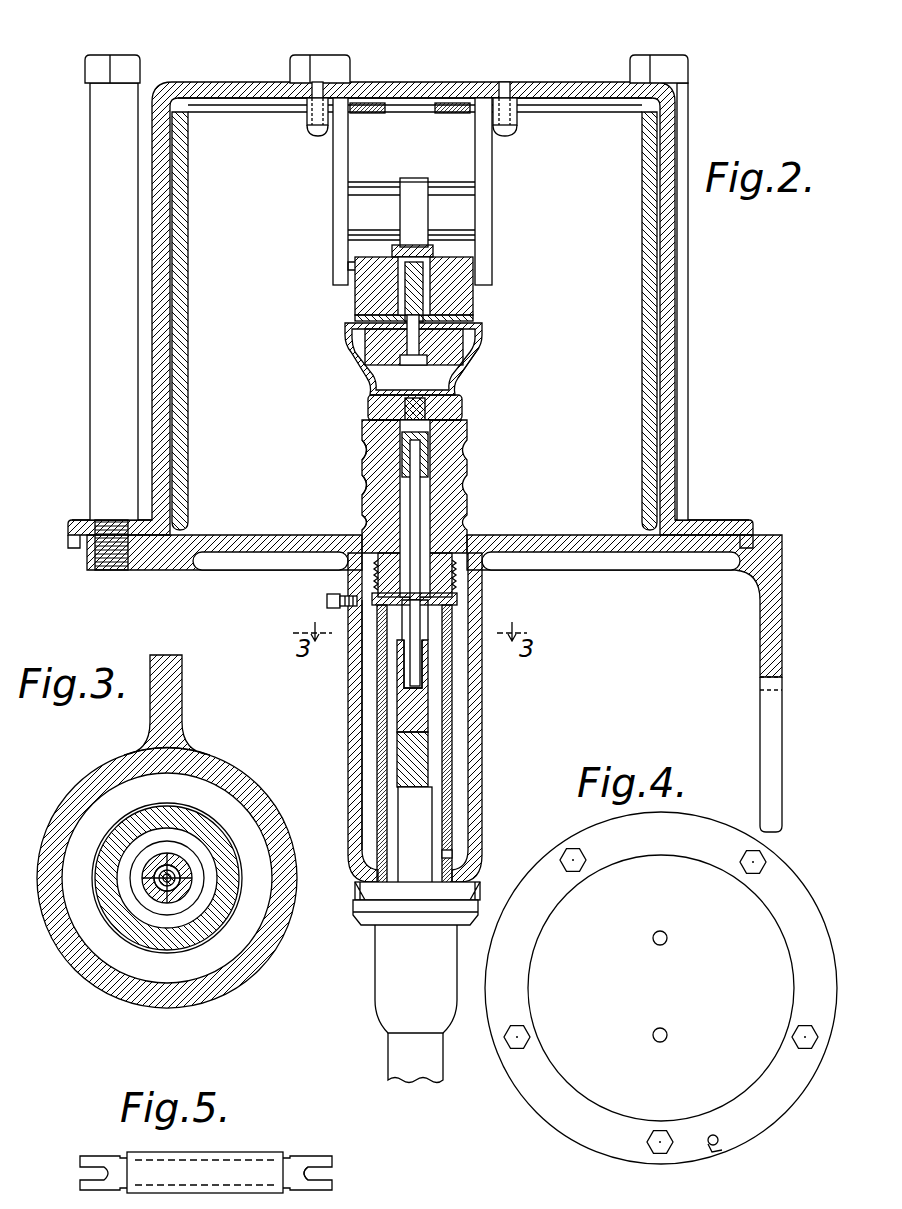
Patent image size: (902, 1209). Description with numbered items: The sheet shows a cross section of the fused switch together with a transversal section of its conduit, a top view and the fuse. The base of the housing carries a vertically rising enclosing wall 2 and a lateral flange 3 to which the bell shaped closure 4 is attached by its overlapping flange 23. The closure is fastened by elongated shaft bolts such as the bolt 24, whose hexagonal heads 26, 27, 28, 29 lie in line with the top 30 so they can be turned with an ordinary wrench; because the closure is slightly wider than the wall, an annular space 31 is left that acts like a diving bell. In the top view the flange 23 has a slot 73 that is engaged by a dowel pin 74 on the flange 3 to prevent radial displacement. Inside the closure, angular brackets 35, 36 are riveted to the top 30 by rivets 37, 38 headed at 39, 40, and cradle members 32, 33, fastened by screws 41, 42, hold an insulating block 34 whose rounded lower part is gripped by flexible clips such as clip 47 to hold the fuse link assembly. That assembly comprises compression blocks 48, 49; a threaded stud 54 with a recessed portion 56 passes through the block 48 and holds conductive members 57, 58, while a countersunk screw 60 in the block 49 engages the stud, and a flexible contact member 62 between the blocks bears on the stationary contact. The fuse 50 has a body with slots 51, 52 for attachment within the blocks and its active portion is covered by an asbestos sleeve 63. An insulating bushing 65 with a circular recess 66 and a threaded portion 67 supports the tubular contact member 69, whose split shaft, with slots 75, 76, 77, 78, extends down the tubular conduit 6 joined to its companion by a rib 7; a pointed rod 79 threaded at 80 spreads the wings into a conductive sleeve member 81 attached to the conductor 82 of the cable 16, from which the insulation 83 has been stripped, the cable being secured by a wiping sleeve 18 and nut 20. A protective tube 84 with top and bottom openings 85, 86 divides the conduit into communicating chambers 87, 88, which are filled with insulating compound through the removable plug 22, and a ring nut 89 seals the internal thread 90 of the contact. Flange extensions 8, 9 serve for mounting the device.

In FIG. 2, the enclosing wall 2 is at (182, 378).
In FIG. 2, the lateral flange 3 is at (170, 560).
In FIG. 2, the bell shaped closure 4 is at (162, 420).
In FIG. 2, the tubular conduit 6 is at (478, 822).
In FIG. 3, the tubular conduit 6 is at (235, 960).
In FIG. 3, the integral intermediate rib 7 is at (168, 670).
In FIG. 2, the lateral flange extension 8 is at (775, 688).
In FIG. 2, the lateral flange extension 9 is at (772, 752).
In FIG. 2, the cable 16 is at (398, 1058).
In FIG. 2, the wiping sleeve 18 is at (383, 990).
In FIG. 2, the nut 20 is at (357, 908).
In FIG. 2, the removable plug 22 is at (326, 600).
In FIG. 2, the overlapping flange 23 is at (80, 534).
In FIG. 4, the overlapping flange 23 is at (566, 1120).
In FIG. 2, the elongated shaft bolt 24 is at (96, 225).
In FIG. 2, the hexagonal head 26 is at (130, 68).
In FIG. 4, the hexagonal head 26 is at (528, 1038).
In FIG. 2, the hexagonal head 27 is at (318, 68).
In FIG. 4, the hexagonal head 27 is at (575, 873).
In FIG. 2, the hexagonal head 28 is at (672, 68).
In FIG. 4, the hexagonal head 28 is at (745, 875).
In FIG. 4, the hexagonal head 29 is at (792, 1037).
In FIG. 2, the top of the bell shaped closure 30 is at (428, 82).
In FIG. 4, the top of the bell shaped closure 30 is at (663, 1128).
In FIG. 2, the annular space 31 is at (180, 276).
In FIG. 2, the cradle member 32 is at (334, 186).
In FIG. 2, the cradle member 33 is at (490, 210).
In FIG. 2, the insulating block 34 is at (470, 160).
In FIG. 2, the angular bracket 35 is at (325, 130).
In FIG. 2, the angular bracket 36 is at (500, 134).
In FIG. 2, the rivet 37 is at (325, 96).
In FIG. 4, the rivet 37 is at (666, 1034).
In FIG. 2, the rivet 38 is at (512, 96).
In FIG. 4, the rivet 38 is at (658, 945).
In FIG. 2, the rivet head 39 is at (306, 120).
In FIG. 2, the rivet head 40 is at (517, 120).
In FIG. 2, the screw 41 is at (367, 110).
In FIG. 2, the screw 42 is at (462, 110).
In FIG. 2, the flexible clip 47 is at (413, 195).
In FIG. 2, the compression block 48 is at (458, 298).
In FIG. 2, the companion compression block 49 is at (455, 350).
In FIG. 5, the connector fork 50 is at (288, 1160).
In FIG. 5, the slot 51 is at (300, 1180).
In FIG. 5, the slot 52 is at (80, 1173).
In FIG. 2, the threaded stud 54 is at (476, 258).
In FIG. 2, the recessed portion 56 is at (353, 262).
In FIG. 2, the conductive member 57 is at (372, 285).
In FIG. 2, the conductive member 58 is at (450, 280).
In FIG. 2, the screw 60 is at (370, 345).
In FIG. 2, the flexible contact member 62 is at (480, 375).
In FIG. 5, the sleeve 63 is at (215, 1172).
In FIG. 2, the insulating bushing 65 is at (466, 486).
In FIG. 2, the circular recess 66 is at (365, 505).
In FIG. 2, the threaded portion 67 is at (450, 535).
In FIG. 2, the tubular contact member 69 is at (455, 406).
In FIG. 4, the slot 73 is at (725, 1152).
In FIG. 4, the dowel pin 74 is at (716, 1143).
In FIG. 2, the slot 75 is at (405, 660).
In FIG. 3, the slot 75 is at (100, 930).
In FIG. 2, the slot 76 is at (420, 670).
In FIG. 3, the slot 76 is at (190, 905).
In FIG. 3, the slot 77 is at (167, 905).
In FIG. 3, the slot 78 is at (180, 856).
In FIG. 2, the rod 79 is at (420, 612).
In FIG. 3, the rod 79 is at (153, 853).
In FIG. 2, the thread 80 is at (425, 465).
In FIG. 2, the sleeve member 81 is at (420, 720).
In FIG. 3, the sleeve member 81 is at (172, 855).
In FIG. 2, the conductor 82 is at (428, 790).
In FIG. 2, the insulation 83 is at (410, 855).
In FIG. 2, the protective tube 84 is at (380, 767).
In FIG. 3, the protective tube 84 is at (140, 905).
In FIG. 2, the transversal top opening 85 is at (384, 606).
In FIG. 2, the transversal bottom opening 86 is at (452, 857).
In FIG. 2, the chamber 87 is at (365, 716).
In FIG. 2, the chamber 88 is at (440, 758).
In FIG. 2, the ring nut 89 is at (393, 412).
In FIG. 2, the internal thread 90 is at (415, 404).